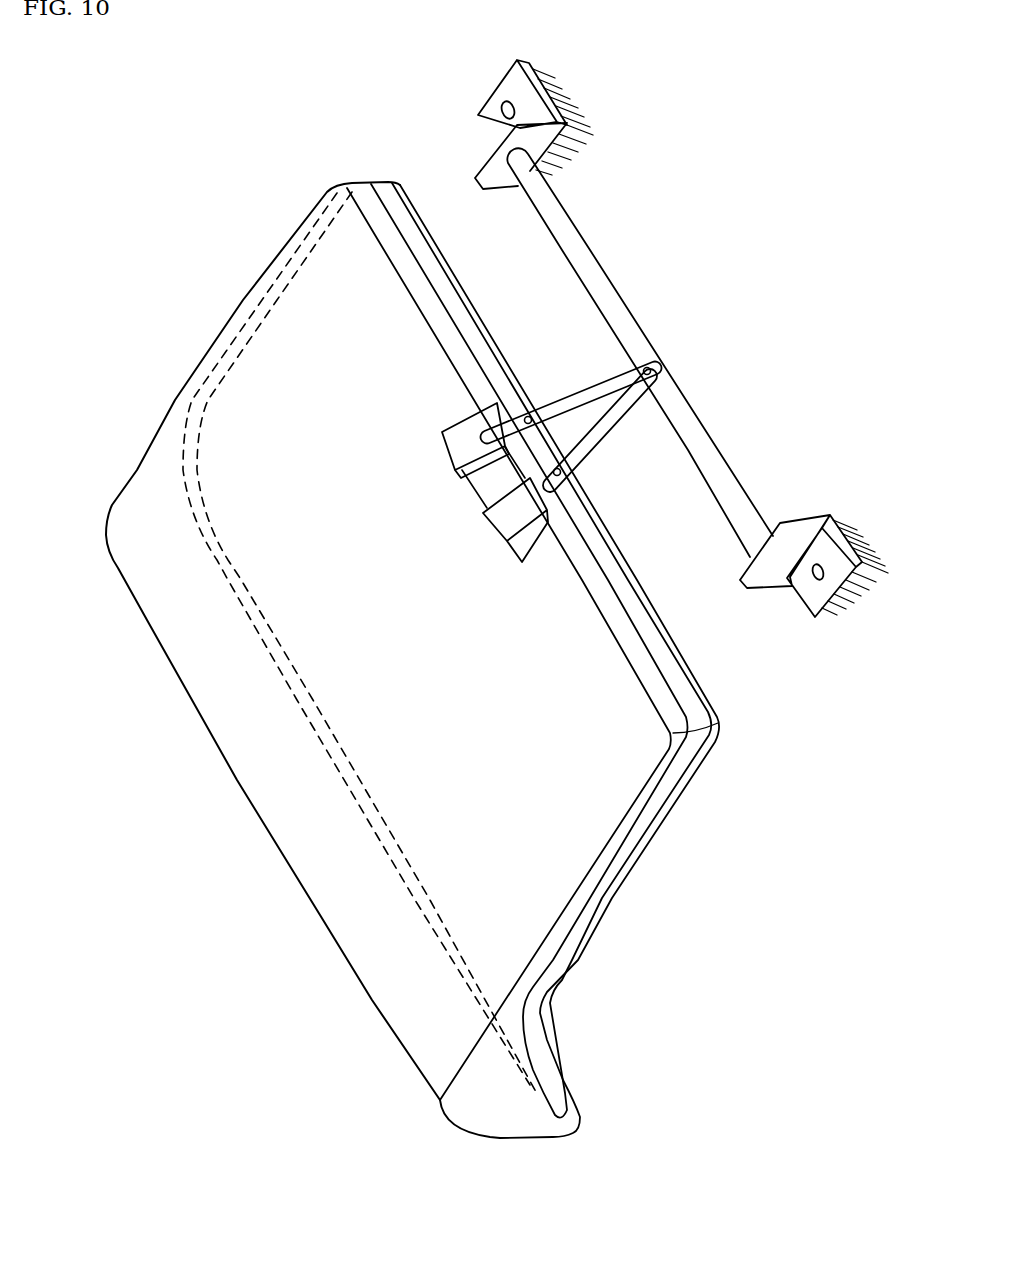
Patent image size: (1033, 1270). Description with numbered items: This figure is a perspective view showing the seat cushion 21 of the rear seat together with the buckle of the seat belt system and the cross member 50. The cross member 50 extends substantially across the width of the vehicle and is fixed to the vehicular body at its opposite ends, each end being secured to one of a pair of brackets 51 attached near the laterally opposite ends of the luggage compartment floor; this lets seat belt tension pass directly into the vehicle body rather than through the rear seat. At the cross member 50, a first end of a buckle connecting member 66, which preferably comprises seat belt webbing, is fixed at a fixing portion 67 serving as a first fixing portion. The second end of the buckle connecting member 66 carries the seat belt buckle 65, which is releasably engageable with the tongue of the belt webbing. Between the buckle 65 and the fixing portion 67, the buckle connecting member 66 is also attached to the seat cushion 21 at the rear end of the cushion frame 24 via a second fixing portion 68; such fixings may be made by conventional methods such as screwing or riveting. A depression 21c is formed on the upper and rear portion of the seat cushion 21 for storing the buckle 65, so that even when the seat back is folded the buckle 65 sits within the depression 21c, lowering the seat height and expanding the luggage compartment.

The seat cushion 21 is at (124, 464).
The depression 21c is at (514, 471).
The cushion frame 24 is at (668, 797).
The cross member 50 is at (587, 260).
The brackets 51 is at (480, 167).
The seat belt buckle 65 is at (437, 448).
The buckle connecting member 66 is at (565, 462).
The fixing portion 67 is at (645, 358).
The second fixing portion 68 is at (532, 415).